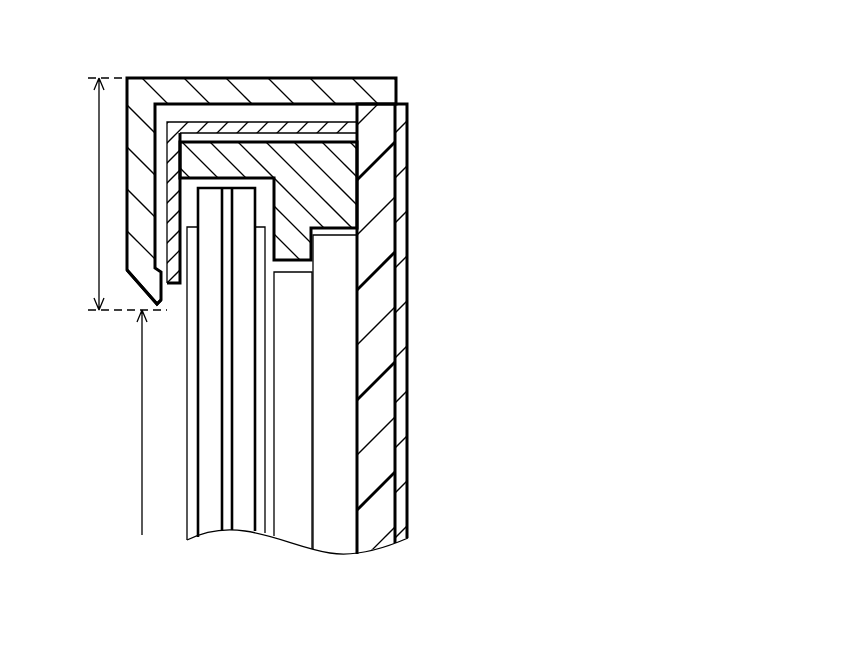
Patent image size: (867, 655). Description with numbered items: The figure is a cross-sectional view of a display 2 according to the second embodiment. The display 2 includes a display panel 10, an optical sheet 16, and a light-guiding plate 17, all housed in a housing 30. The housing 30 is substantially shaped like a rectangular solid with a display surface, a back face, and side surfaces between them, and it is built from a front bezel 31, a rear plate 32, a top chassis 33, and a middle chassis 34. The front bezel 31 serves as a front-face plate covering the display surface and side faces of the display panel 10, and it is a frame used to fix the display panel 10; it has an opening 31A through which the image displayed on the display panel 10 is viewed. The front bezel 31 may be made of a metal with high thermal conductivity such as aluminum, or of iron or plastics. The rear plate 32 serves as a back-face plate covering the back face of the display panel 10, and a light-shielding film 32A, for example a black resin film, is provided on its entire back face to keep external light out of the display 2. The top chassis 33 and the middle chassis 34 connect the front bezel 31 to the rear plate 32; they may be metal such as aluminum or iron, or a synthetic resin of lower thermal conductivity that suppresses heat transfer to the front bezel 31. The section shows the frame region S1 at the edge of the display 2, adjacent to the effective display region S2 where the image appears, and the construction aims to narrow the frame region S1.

The display 2 is at (413, 46).
The display panel 10 is at (265, 548).
The optical sheet 16 is at (298, 438).
The light-guiding plate 17 is at (345, 383).
The housing 30 is at (490, 75).
The front bezel 31 is at (385, 88).
The opening 31A is at (170, 420).
The rear plate 32 is at (380, 225).
The light-shielding film 32A is at (402, 262).
The top chassis 33 is at (340, 126).
The middle chassis 34 is at (345, 172).
The frame region S1 is at (99, 196).
The effective display region S2 is at (142, 370).